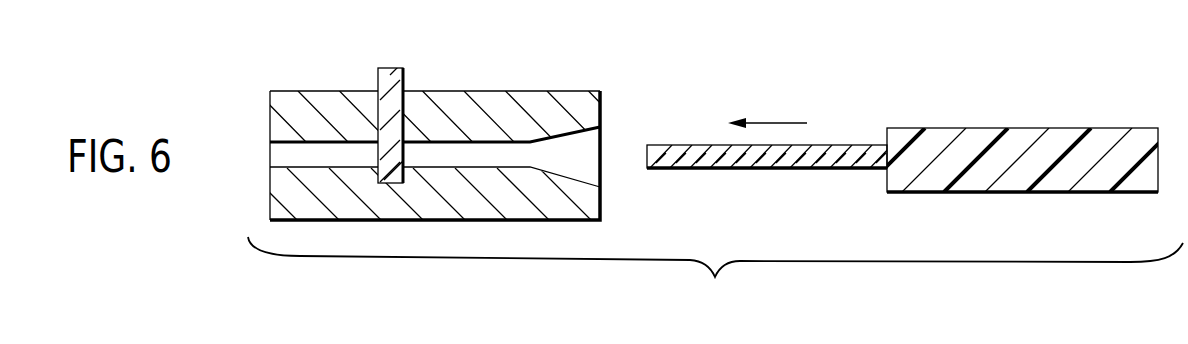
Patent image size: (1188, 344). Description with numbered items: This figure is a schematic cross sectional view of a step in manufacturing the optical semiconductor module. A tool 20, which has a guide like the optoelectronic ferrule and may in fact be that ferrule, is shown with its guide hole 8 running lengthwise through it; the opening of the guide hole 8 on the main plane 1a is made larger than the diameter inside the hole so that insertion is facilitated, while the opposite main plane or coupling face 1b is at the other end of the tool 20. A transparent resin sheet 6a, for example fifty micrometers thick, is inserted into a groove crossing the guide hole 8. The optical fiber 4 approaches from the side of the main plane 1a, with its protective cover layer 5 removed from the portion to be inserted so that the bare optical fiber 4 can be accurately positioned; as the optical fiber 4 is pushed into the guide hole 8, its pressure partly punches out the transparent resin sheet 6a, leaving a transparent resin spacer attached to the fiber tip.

The main plane 1a is at (600, 206).
The coupling face 1b is at (270, 120).
The tool 20 is at (522, 98).
The guide hole 8 is at (598, 147).
The transparent resin sheet 6a is at (392, 70).
The optical fiber 4 is at (845, 145).
The protective cover layer 5 is at (1021, 130).